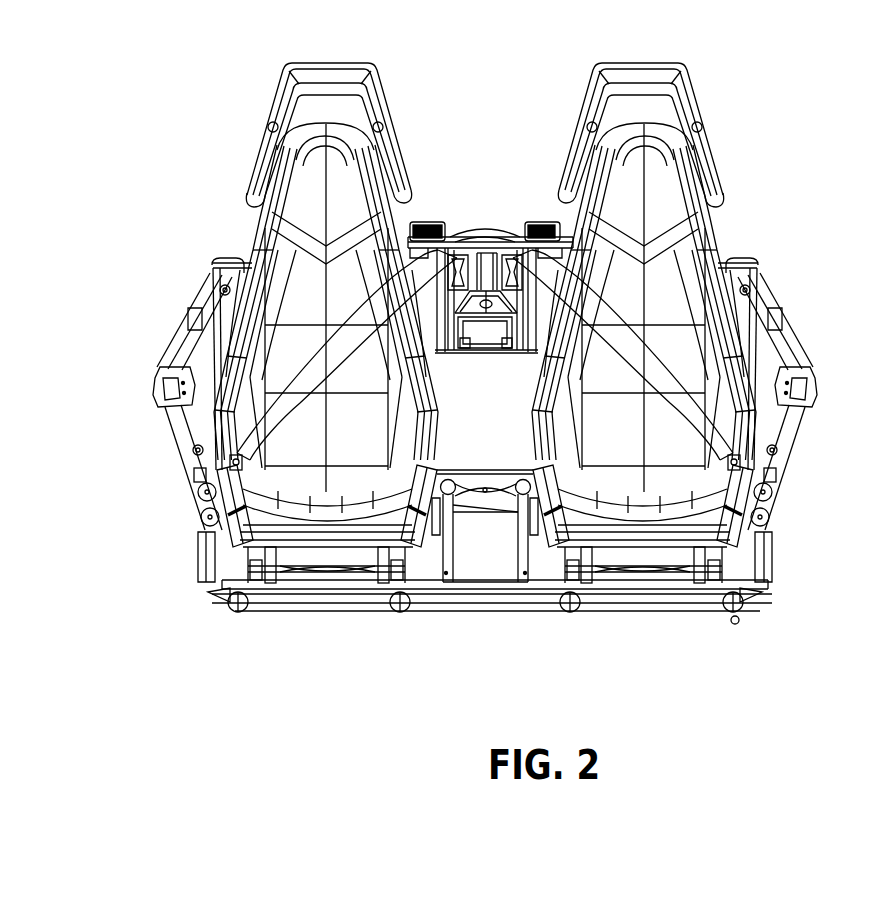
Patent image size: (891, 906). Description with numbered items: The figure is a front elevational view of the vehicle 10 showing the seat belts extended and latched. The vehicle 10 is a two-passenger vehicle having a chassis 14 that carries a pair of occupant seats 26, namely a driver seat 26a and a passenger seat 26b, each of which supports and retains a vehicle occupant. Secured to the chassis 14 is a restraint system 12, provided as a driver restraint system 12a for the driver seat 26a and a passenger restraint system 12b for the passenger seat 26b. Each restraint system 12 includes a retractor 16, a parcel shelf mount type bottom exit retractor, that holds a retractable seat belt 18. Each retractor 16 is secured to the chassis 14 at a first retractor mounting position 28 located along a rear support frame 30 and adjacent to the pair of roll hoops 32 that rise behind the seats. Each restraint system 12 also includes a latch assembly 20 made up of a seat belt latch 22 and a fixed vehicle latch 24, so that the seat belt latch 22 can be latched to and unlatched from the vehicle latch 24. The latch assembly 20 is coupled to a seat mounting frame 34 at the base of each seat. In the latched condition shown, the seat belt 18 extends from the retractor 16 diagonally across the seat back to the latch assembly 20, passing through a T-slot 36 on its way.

The vehicle 10 is at (788, 134).
The restraint system 12 is at (486, 130).
The driver restraint system 12a is at (685, 357).
The passenger restraint system 12b is at (290, 357).
The chassis 14 is at (190, 313).
The retractor 16 is at (414, 222).
The seat belt 18 is at (263, 420).
The latch assembly 20 is at (759, 442).
The seat belt latch 22 is at (233, 460).
The vehicle latch 24 is at (735, 466).
The occupant seat 26 is at (697, 244).
The driver seat 26a is at (680, 274).
The passenger seat 26b is at (280, 261).
The first retractor mounting position 28 is at (443, 209).
The rear support frame 30 is at (463, 236).
The roll hoop 32 is at (697, 84).
The seat mounting frame 34 is at (213, 474).
The T-slot 36 is at (527, 233).